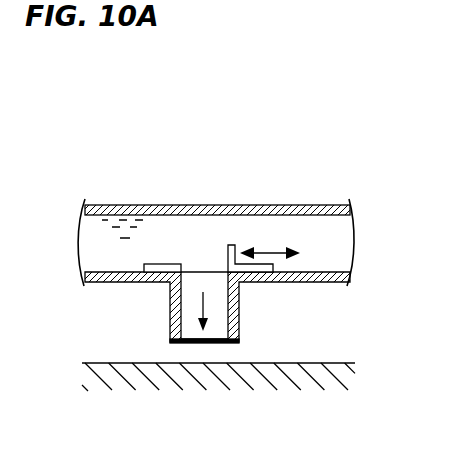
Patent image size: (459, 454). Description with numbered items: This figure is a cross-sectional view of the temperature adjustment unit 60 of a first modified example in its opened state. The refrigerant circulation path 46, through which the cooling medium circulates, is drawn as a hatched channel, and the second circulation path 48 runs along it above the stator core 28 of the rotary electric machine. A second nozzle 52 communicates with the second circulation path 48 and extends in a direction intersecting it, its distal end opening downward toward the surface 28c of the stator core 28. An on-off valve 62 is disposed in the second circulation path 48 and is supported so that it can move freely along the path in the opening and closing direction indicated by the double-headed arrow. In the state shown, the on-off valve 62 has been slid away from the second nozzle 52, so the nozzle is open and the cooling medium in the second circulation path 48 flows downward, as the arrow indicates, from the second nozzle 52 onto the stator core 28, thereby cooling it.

The refrigerant circulation path 46 is at (216, 224).
The second circulation path 48 is at (323, 206).
The second nozzle 52 is at (170, 305).
The temperature adjustment unit 60 is at (232, 200).
The on-off valve 62 is at (233, 245).
The stator core surface 28c is at (238, 346).
The stator core 28 is at (305, 363).